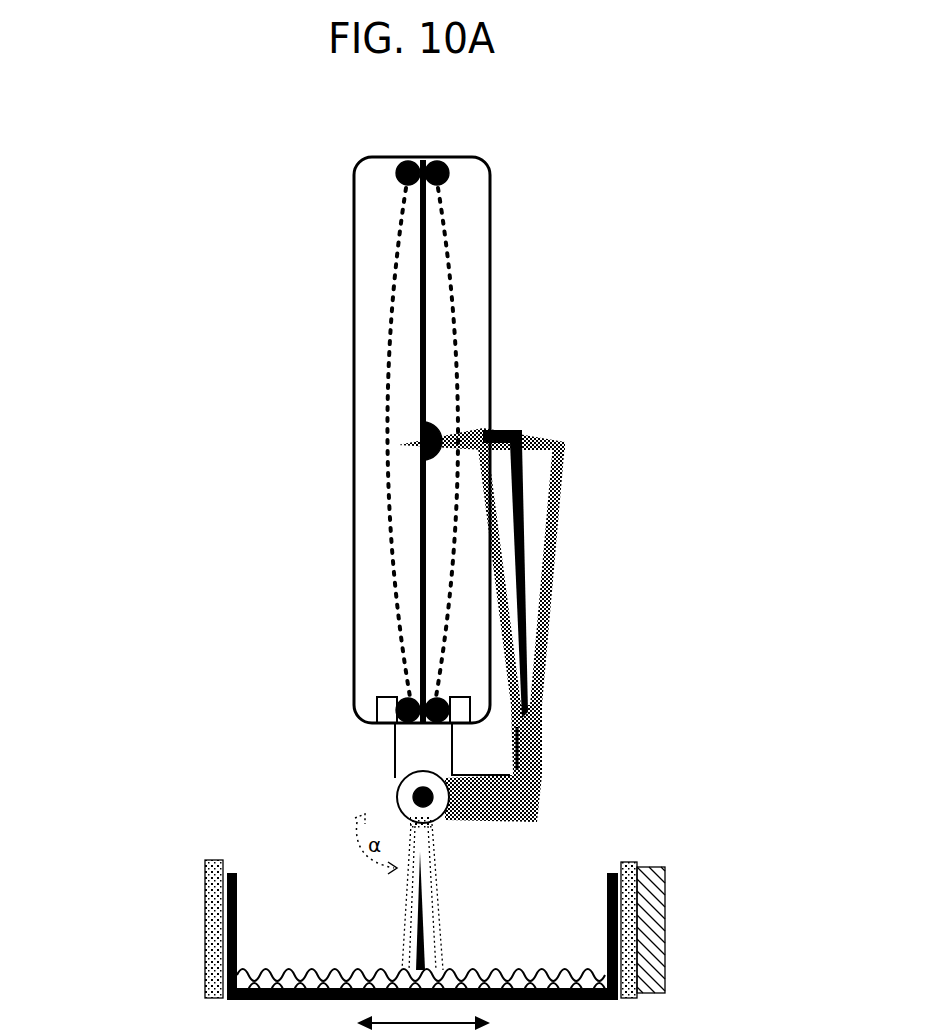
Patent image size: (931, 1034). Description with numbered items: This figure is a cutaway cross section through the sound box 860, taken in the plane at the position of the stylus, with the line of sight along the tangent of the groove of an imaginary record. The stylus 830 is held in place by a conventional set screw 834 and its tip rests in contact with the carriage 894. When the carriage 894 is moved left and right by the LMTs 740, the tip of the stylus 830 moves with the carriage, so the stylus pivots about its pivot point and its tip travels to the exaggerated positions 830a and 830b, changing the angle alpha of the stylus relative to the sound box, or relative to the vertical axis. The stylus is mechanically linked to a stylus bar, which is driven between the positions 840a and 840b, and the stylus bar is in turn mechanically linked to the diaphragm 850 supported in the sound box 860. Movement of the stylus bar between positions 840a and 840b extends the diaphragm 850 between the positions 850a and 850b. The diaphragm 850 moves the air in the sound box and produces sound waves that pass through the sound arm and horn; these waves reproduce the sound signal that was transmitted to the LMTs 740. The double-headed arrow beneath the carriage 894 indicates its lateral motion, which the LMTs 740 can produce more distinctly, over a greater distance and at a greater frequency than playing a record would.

The sound box 860 is at (290, 298).
The diaphragm 850 is at (421, 507).
The diaphragm position 850a is at (385, 365).
The diaphragm position 850b is at (455, 322).
The stylus bar position 840a is at (497, 553).
The stylus bar position 840b is at (558, 505).
The set screw 834 is at (418, 792).
The stylus 830 is at (421, 943).
The stylus tip position 830a is at (440, 912).
The stylus tip position 830b is at (410, 895).
The carriage 894 is at (353, 973).
The LMTs 740 is at (665, 913).